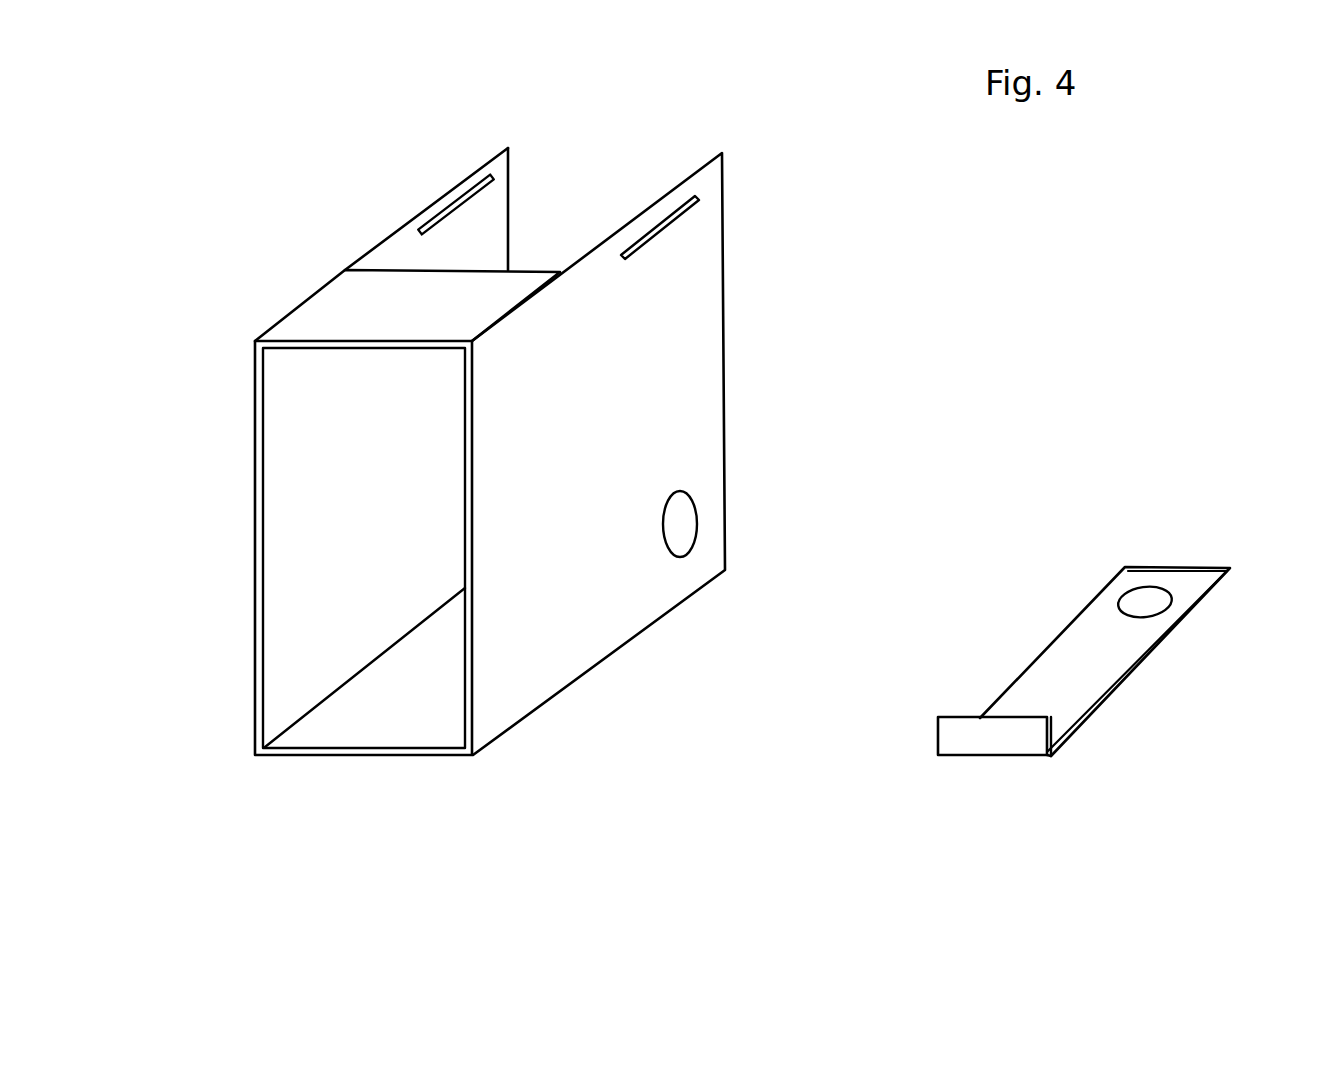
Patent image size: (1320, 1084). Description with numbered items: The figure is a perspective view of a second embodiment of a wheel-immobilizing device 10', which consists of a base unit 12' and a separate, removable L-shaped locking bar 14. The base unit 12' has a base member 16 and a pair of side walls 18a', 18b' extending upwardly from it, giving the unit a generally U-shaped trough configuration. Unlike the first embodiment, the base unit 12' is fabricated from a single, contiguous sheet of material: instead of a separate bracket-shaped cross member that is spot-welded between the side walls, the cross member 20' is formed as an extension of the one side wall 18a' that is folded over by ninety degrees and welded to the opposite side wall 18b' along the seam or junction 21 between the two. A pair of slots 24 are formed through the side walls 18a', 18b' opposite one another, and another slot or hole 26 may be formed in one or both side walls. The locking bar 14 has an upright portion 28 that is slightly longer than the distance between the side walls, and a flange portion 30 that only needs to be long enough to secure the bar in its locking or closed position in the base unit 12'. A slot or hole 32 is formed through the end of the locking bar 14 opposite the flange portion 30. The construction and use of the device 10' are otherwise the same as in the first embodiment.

The wheel-immobilizing device 10' is at (666, 887).
The base unit 12' is at (493, 461).
The locking bar 14 is at (1205, 515).
The base member 16 is at (398, 735).
The side wall 18a' is at (314, 548).
The side wall 18b' is at (587, 451).
The cross member 20' is at (407, 343).
The seam 21 is at (528, 298).
The slots 24 is at (458, 203).
The hole 26 is at (687, 528).
The upright portion 28 is at (1107, 672).
The flange portion 30 is at (1016, 742).
The hole 32 is at (1158, 604).